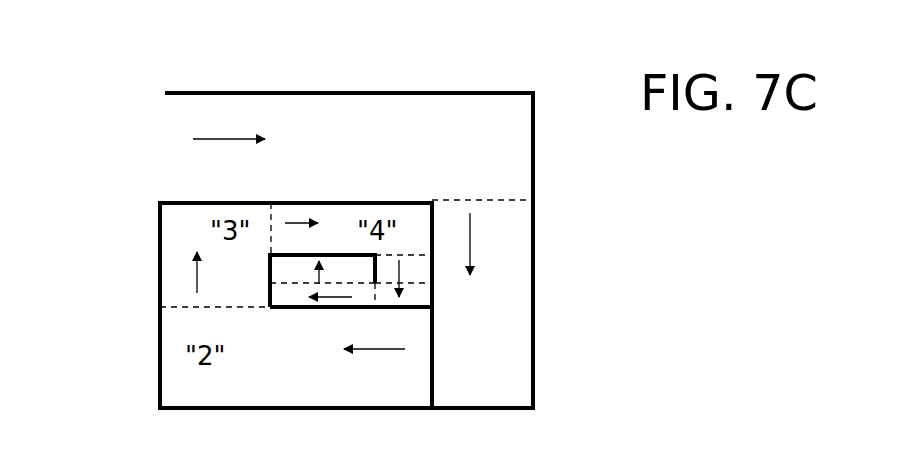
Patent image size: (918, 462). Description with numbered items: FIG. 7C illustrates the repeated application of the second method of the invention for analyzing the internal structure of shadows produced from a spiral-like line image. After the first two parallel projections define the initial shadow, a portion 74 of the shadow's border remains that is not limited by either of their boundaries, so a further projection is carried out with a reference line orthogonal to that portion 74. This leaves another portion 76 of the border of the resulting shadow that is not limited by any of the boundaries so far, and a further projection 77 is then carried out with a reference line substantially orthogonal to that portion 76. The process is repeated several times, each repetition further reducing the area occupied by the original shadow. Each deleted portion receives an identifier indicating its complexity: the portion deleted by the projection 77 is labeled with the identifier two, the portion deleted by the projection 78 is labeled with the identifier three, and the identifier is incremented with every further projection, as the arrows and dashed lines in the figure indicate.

The portion of the border of the shadow 74 is at (470, 200).
The portion of the border of the resulting shadow 76 is at (433, 348).
The further projection 77 is at (383, 349).
The projection 78 is at (196, 280).